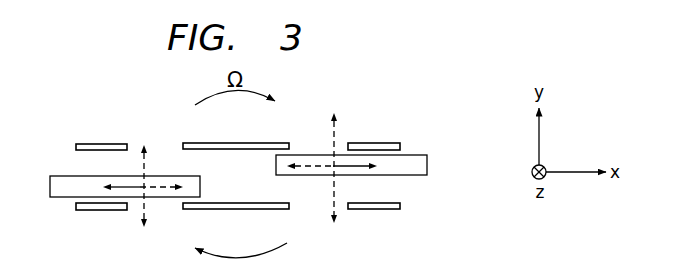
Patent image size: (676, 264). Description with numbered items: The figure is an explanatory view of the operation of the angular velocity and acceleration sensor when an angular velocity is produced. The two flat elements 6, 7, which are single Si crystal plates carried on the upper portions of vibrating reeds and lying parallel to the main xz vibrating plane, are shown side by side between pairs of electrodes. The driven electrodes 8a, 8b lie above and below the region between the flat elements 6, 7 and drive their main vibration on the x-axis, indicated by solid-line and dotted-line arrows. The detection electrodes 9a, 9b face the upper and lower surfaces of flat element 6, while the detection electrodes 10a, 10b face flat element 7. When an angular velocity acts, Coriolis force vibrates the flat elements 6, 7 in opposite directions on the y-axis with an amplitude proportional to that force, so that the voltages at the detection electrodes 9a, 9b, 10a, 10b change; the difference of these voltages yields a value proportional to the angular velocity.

The flat element 6 is at (62, 198).
The flat element 7 is at (428, 160).
The driven electrode 8a is at (275, 142).
The driven electrode 8b is at (277, 210).
The detection electrode 9a is at (102, 143).
The detection electrode 9b is at (98, 211).
The detection electrode 10a is at (373, 143).
The detection electrode 10b is at (373, 210).